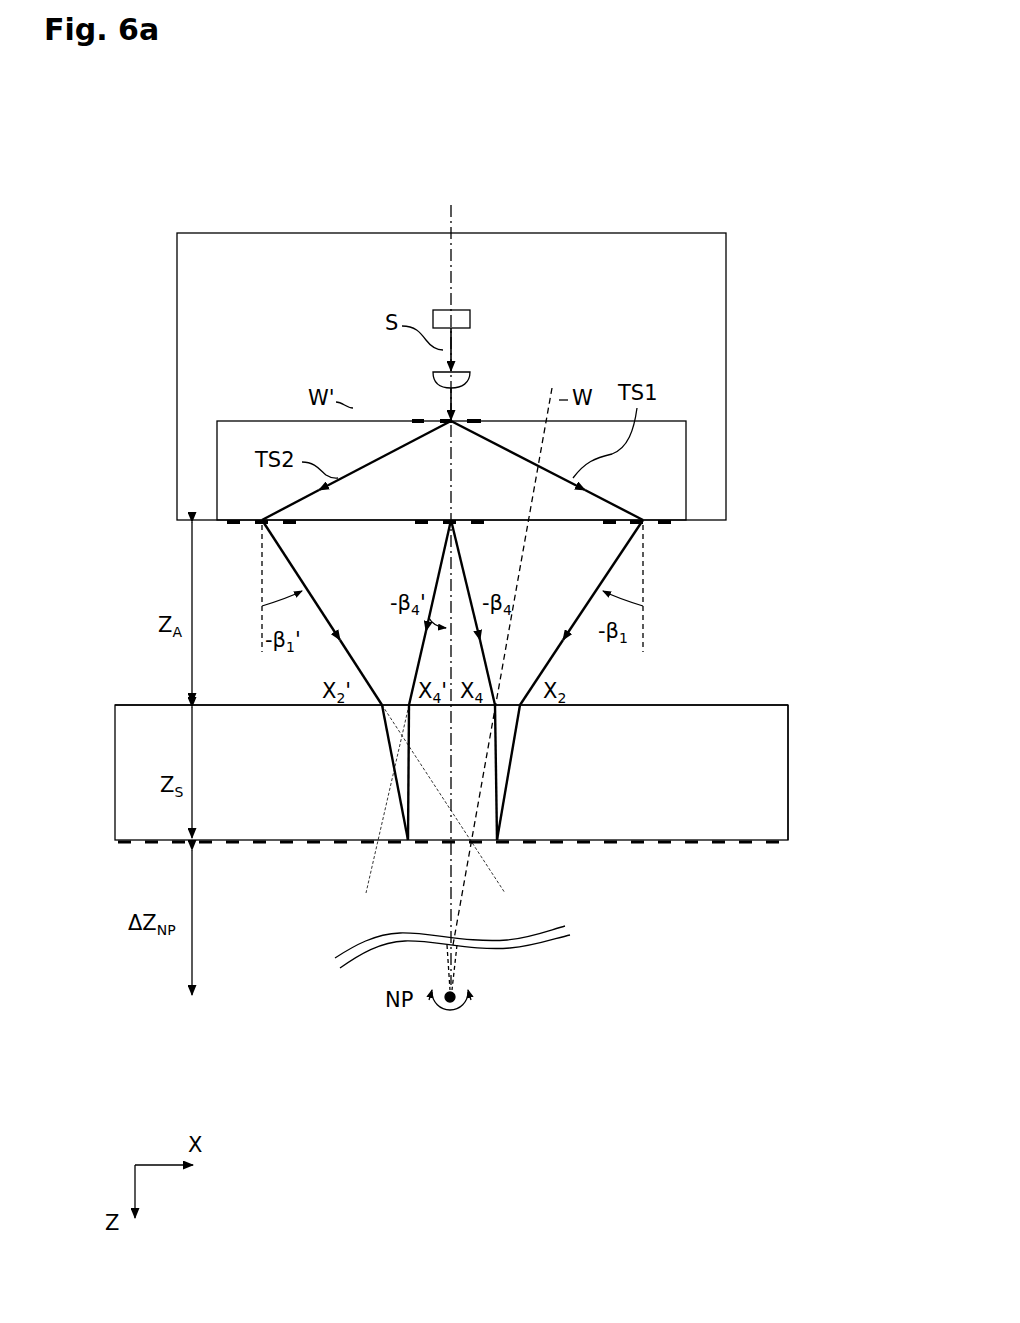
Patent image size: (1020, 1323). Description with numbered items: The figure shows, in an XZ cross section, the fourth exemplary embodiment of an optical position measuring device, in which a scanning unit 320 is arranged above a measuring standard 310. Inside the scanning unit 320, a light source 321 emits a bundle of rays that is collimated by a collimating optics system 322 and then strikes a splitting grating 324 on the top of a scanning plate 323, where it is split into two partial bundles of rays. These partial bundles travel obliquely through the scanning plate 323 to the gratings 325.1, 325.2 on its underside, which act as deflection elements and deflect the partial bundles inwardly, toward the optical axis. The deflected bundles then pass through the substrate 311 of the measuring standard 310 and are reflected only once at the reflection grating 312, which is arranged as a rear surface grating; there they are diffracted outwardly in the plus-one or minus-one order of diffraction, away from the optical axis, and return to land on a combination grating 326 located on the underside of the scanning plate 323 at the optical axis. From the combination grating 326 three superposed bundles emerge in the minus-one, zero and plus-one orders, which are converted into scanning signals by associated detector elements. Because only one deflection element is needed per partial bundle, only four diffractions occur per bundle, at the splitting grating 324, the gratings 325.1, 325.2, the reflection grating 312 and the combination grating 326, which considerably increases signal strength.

The scanning unit 320 is at (168, 335).
The light source 321 is at (458, 318).
The collimating optics system 322 is at (462, 380).
The scanning plate 323 is at (655, 480).
The splitting grating 324 is at (417, 418).
The grating 325.1 is at (662, 522).
The grating 325.2 is at (243, 522).
The combination grating 326 is at (464, 522).
The measuring standard 310 is at (110, 784).
The substrate 311 is at (768, 795).
The reflection grating 312 is at (718, 842).